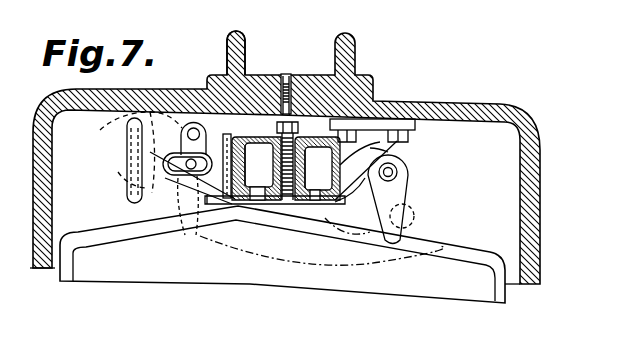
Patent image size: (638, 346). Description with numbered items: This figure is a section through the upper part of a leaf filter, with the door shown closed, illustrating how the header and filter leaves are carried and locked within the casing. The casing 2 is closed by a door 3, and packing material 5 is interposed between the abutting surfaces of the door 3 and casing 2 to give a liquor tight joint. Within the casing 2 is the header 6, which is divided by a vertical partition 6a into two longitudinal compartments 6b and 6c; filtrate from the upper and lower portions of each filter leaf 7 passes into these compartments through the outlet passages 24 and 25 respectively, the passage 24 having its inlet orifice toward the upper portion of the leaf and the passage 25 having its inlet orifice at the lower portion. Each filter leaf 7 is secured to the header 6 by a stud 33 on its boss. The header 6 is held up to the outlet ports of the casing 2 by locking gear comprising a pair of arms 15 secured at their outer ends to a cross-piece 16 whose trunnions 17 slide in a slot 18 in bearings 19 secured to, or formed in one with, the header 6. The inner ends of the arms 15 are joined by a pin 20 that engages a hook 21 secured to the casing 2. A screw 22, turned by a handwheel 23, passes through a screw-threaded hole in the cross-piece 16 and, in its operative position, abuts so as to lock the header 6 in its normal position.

The casing 2 is at (532, 238).
The door 3 is at (250, 76).
The packing material 5 is at (284, 82).
The header 6 is at (328, 139).
The vertical partition 6a is at (317, 168).
The compartment 6b is at (255, 166).
The compartment 6c is at (314, 169).
The filter leaf 7 is at (212, 270).
The arms 15 is at (372, 232).
The cross-piece 16 is at (207, 196).
The trunnions 17 is at (170, 165).
The slot 18 is at (182, 144).
The bearings 19 is at (175, 175).
The pin 20 is at (398, 172).
The hook 21 is at (395, 152).
The screw 22 is at (222, 135).
The handwheel 23 is at (127, 133).
The outlet passage 24 is at (258, 197).
The outlet passage 25 is at (362, 205).
The stud 33 is at (259, 171).